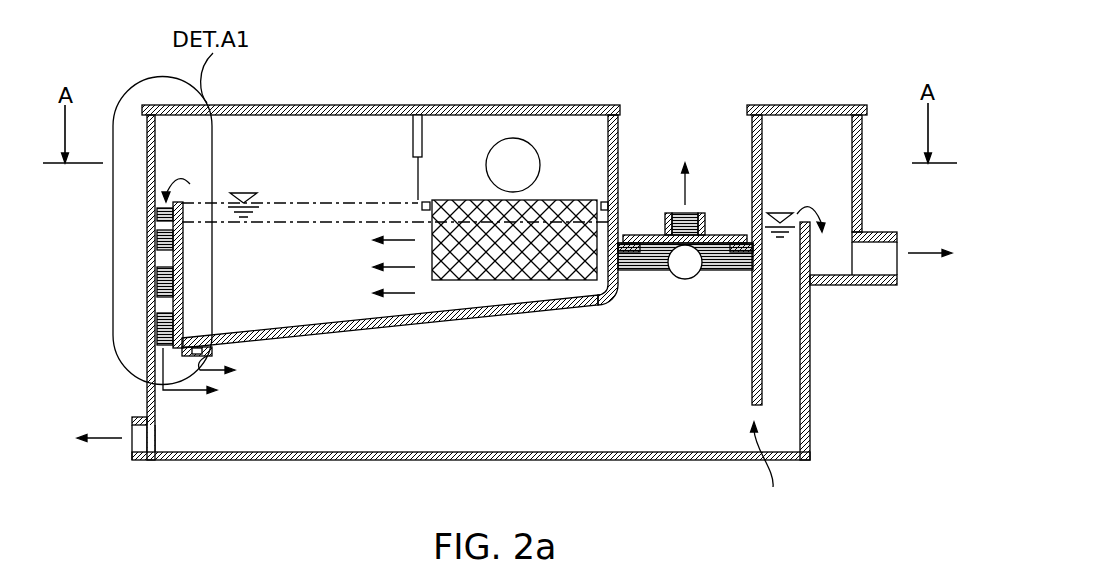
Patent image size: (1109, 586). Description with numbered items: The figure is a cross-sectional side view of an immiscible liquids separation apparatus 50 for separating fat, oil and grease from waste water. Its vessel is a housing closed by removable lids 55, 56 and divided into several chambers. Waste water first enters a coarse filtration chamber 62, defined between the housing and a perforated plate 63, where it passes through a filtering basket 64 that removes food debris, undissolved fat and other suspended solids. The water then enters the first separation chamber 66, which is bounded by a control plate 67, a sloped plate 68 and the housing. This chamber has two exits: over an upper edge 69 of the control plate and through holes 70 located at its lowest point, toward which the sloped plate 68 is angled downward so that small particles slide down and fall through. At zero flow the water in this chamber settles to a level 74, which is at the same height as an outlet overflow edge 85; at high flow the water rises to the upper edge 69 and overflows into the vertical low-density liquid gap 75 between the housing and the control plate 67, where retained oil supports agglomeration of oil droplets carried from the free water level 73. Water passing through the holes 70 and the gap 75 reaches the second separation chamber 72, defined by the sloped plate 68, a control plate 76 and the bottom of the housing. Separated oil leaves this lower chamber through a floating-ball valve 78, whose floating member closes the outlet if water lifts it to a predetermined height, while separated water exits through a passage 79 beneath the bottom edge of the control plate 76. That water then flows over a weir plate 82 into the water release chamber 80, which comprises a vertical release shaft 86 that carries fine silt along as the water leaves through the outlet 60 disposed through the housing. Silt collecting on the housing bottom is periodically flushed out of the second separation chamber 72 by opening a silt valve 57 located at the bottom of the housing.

The immiscible liquids separation apparatus 50 is at (535, 82).
The removable lid 55 is at (423, 106).
The removable lid 56 is at (807, 104).
The silt valve 57 is at (140, 461).
The high-density liquid (water) outlet 60 is at (877, 286).
The coarse filtration chamber 62 is at (588, 160).
The perforated plate 63 is at (417, 187).
The filtering basket 64 is at (450, 281).
The first separation chamber 66 is at (347, 273).
The control plate 67 is at (182, 278).
The sloped plate 68 is at (297, 336).
The upper edge 69 is at (173, 203).
The holes 70 is at (190, 337).
The second separation chamber 72 is at (588, 392).
The free water level 73 is at (290, 203).
The level 74 is at (313, 223).
The vertical low-density liquid (FOG) gap 75 is at (148, 270).
The control plate 76 is at (752, 366).
The floating-ball valve 78 is at (700, 216).
The passage 79 is at (771, 470).
The high-density liquid (water) release chamber 80 is at (807, 185).
The weir plate 82 is at (815, 250).
The outlet overflow edge 85 is at (797, 210).
The vertical release shaft 86 is at (782, 348).